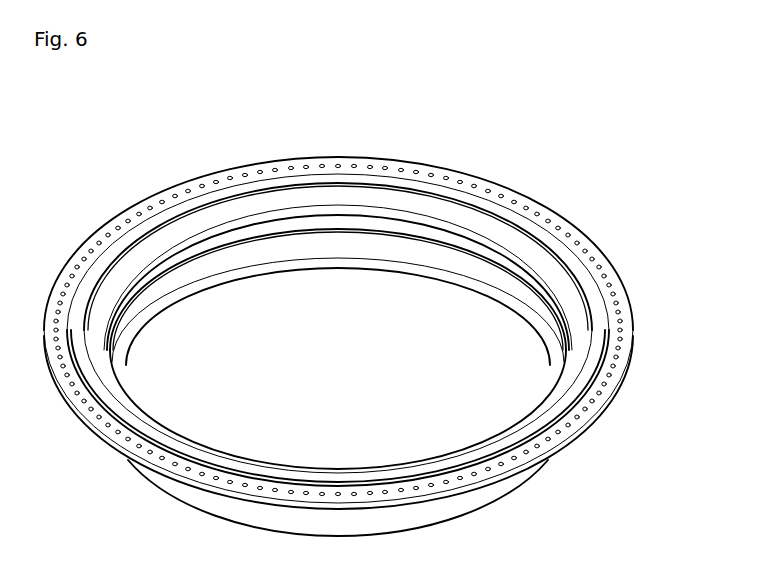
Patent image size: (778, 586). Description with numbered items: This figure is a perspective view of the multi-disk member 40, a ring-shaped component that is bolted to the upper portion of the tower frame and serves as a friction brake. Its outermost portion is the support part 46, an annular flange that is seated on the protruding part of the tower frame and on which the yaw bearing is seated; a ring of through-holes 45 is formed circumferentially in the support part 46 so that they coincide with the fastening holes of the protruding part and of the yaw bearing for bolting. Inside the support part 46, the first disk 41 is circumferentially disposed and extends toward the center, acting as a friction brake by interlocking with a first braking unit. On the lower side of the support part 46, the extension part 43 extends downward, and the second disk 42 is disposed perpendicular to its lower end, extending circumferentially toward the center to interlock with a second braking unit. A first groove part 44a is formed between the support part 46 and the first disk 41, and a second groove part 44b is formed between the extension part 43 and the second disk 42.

The multi-disk member 40 is at (158, 142).
The first disk 41 is at (568, 287).
The second disk 42 is at (552, 327).
The extension part 43 is at (477, 496).
The first groove part 44a is at (472, 190).
The second groove part 44b is at (428, 238).
The through-holes 45 is at (506, 196).
The support part 46 is at (555, 213).